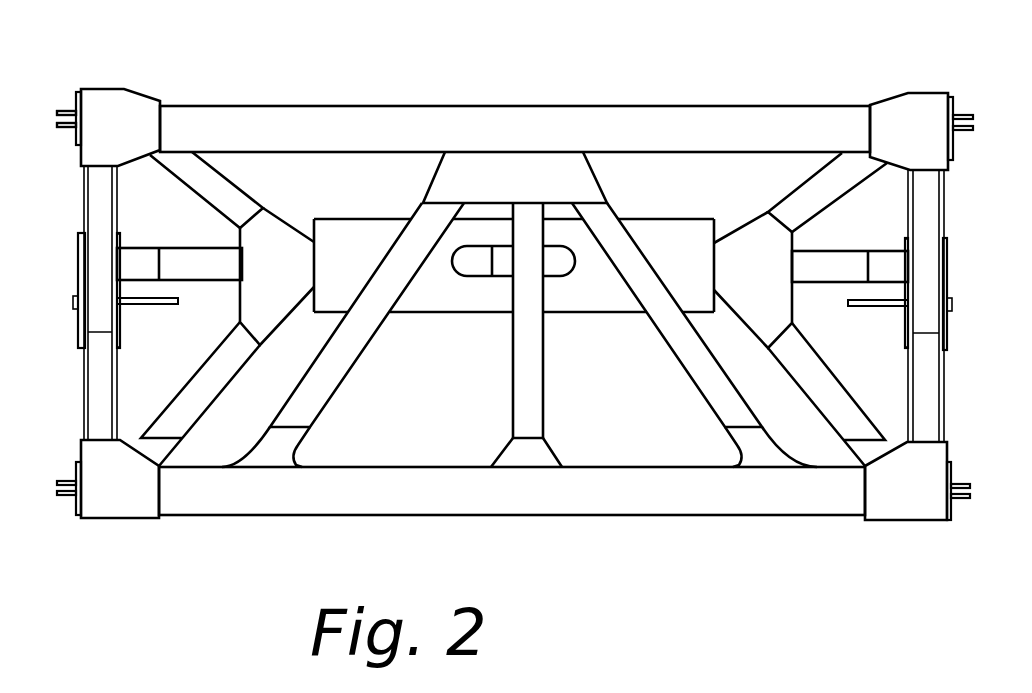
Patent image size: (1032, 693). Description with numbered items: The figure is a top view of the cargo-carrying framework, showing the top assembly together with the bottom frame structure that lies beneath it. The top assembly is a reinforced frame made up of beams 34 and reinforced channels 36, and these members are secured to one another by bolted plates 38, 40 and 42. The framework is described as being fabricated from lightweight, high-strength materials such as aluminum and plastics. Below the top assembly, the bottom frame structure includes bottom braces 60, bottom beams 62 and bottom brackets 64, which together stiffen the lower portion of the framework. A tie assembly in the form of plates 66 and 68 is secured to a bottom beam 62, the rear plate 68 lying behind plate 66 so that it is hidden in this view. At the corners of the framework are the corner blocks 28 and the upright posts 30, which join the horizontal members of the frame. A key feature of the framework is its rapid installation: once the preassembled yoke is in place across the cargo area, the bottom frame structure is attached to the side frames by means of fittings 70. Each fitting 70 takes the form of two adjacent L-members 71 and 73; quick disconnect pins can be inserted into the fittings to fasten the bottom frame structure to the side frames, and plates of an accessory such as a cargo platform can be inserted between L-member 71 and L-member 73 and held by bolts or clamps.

The corner connector block 28 is at (138, 110).
The upright column 30 is at (110, 88).
The beams 34 is at (598, 104).
The reinforced channels 36 is at (343, 384).
The bolted plate 38 is at (594, 183).
The bolted plate 40 is at (548, 450).
The bolted plate 42 is at (296, 456).
The bottom braces 60 is at (210, 356).
The bottom beams 62 is at (192, 216).
The bottom brackets 64 is at (308, 175).
The plate 66 is at (466, 314).
The plate 68 is at (573, 315).
The fittings 70 is at (53, 118).
The L-member 71 is at (66, 108).
The L-member 73 is at (62, 126).